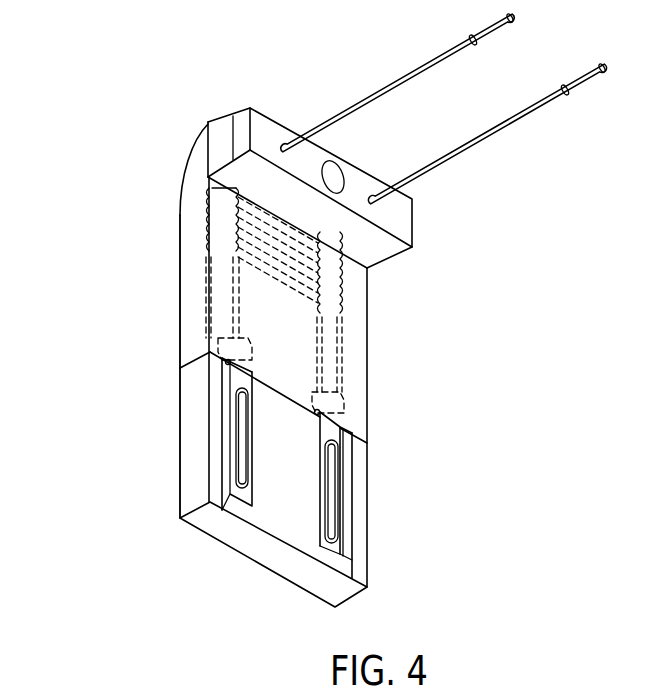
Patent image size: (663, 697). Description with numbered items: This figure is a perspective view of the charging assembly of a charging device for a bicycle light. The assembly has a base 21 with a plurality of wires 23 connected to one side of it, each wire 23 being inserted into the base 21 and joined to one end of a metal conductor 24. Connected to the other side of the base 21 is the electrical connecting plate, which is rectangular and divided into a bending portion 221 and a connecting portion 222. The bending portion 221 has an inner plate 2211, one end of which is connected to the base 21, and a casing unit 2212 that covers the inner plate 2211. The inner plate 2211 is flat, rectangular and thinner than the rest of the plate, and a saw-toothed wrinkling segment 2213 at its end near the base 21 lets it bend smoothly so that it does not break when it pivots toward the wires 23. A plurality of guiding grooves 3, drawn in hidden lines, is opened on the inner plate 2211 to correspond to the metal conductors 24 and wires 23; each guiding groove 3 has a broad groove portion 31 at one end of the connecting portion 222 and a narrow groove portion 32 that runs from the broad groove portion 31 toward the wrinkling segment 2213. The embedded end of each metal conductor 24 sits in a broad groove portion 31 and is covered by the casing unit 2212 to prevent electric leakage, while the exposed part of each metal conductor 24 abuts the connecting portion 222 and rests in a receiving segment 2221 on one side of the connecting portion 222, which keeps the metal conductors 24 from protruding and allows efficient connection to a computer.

The bending portion 221 is at (148, 163).
The base 21 is at (220, 135).
The wires 23 is at (383, 90).
The casing unit 2212 is at (180, 252).
The wrinkling segment 2213 is at (268, 285).
The inner plate 2211 is at (267, 327).
The connecting portion 222 is at (188, 435).
The metal conductors 24 is at (247, 502).
The receiving segment 2221 is at (343, 570).
The guiding grooves 3 is at (358, 374).
The broad groove portion 31 is at (340, 413).
The narrow groove portion 32 is at (330, 363).